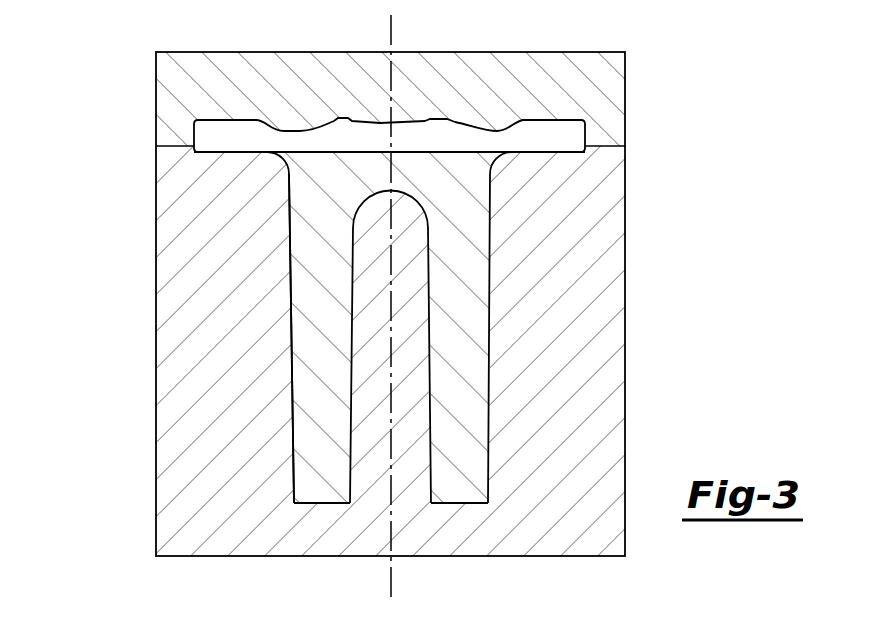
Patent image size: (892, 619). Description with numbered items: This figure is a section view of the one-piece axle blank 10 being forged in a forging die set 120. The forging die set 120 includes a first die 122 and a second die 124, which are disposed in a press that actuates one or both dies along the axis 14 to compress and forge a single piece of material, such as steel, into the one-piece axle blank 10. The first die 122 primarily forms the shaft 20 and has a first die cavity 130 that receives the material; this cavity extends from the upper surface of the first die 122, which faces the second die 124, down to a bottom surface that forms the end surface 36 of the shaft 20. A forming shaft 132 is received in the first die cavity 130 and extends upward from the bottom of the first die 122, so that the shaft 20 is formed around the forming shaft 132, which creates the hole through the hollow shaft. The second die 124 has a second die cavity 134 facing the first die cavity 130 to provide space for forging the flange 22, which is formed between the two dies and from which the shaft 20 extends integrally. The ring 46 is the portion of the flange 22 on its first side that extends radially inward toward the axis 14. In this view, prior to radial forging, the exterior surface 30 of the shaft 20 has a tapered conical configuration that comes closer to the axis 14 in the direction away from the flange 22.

The forging die set 120 is at (643, 61).
The second die 124 is at (156, 91).
The first die 122 is at (156, 415).
The second die cavity 134 is at (194, 133).
The flange 22 is at (451, 68).
The ring 46 is at (566, 120).
The axis 14 is at (390, 33).
The one-piece axle blank 10 is at (290, 262).
The shaft 20 is at (410, 382).
The exterior surface 30 is at (410, 382).
The forming shaft 132 is at (430, 333).
The first die cavity 130 is at (323, 504).
The end surface 36 is at (443, 503).